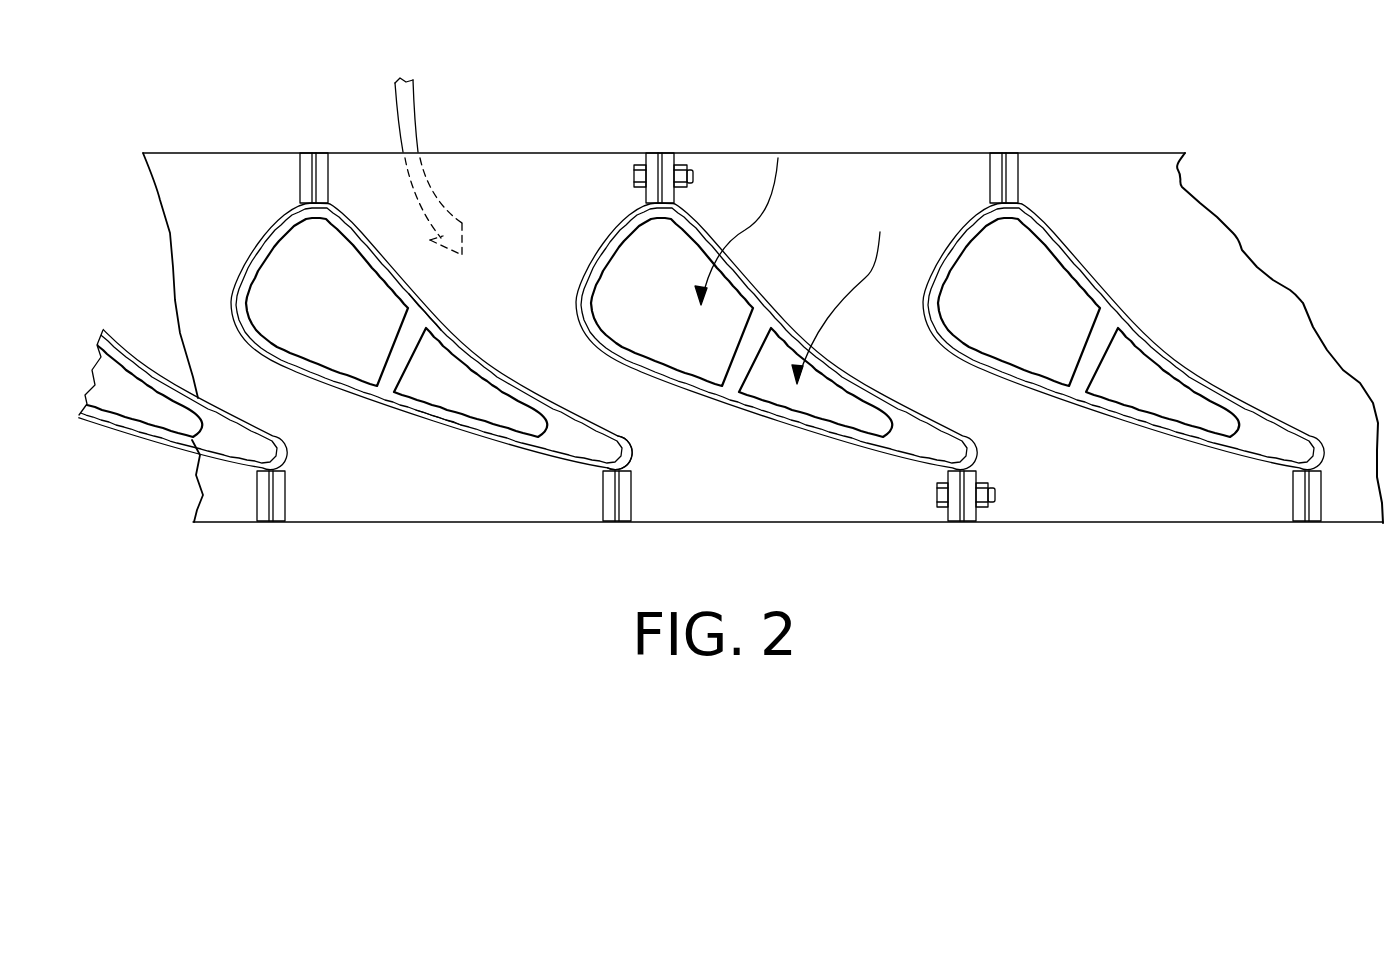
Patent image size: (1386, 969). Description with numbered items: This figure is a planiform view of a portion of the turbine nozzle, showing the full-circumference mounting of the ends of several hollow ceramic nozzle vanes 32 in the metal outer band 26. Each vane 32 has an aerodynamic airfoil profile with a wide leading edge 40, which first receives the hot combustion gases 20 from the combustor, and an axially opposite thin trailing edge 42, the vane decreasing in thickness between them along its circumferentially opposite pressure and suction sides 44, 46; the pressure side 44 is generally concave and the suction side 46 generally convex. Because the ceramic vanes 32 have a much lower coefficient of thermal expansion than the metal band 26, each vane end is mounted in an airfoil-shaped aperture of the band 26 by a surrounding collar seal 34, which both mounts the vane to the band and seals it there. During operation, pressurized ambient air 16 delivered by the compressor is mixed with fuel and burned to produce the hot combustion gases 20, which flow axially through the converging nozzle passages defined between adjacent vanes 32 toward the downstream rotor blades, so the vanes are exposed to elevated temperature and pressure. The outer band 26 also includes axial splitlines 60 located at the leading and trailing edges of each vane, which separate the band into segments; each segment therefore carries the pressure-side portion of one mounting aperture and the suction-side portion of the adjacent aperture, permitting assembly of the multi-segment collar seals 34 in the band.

The ambient air 16 is at (872, 262).
The hot combustion gases 20 is at (415, 98).
The radially outer band 26 is at (1249, 337).
The nozzle vane 32 is at (273, 340).
The collar seal 34 is at (578, 308).
The leading edge 40 is at (262, 233).
The trailing edge 42 is at (603, 455).
The pressure side 44 is at (420, 303).
The suction side 46 is at (433, 415).
The axial splitline 60 is at (659, 153).